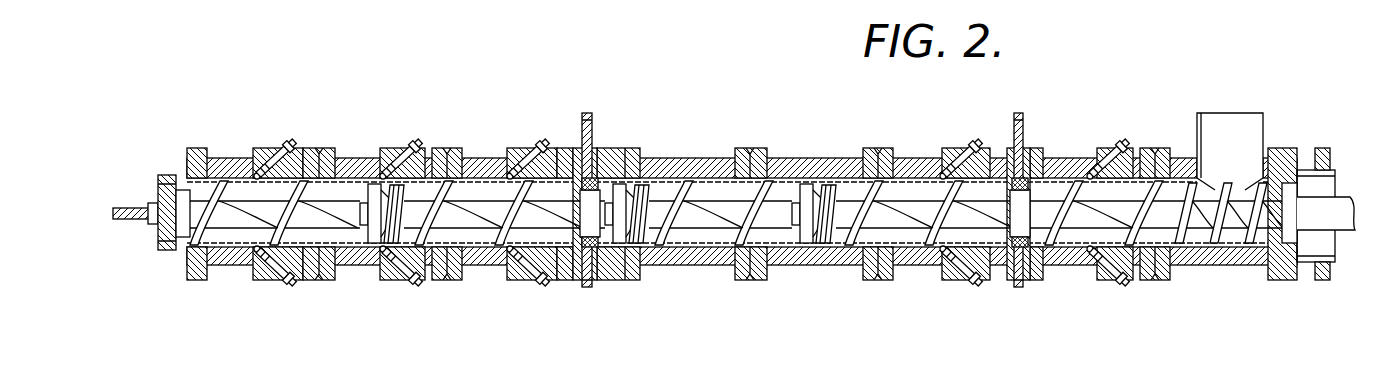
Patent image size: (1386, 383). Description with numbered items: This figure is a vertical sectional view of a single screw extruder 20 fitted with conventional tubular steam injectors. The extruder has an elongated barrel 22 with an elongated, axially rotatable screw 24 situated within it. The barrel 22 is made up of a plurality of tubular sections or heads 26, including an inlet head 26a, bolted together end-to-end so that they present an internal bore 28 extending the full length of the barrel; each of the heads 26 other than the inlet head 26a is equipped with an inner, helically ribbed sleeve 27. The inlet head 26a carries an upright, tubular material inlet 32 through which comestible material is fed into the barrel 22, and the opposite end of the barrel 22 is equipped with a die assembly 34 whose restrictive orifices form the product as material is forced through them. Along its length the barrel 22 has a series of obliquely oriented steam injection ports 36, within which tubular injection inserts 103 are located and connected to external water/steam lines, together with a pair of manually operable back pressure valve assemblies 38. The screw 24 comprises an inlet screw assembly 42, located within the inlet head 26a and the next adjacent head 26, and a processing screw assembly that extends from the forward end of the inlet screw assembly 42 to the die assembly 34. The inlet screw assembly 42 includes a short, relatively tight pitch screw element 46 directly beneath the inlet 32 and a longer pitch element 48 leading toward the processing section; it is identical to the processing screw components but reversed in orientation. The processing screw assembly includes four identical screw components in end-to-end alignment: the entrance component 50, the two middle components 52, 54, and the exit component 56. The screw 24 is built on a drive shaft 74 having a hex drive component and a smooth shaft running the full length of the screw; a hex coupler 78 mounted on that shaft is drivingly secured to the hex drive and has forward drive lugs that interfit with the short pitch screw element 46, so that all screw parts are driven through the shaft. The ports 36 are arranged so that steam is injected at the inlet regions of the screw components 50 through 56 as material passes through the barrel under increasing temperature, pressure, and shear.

The single screw extruder 20 is at (1122, 40).
The barrel 22 is at (779, 135).
The screw 24 is at (736, 214).
The tubular sections or heads 26 is at (225, 265).
The inlet head 26a is at (1232, 265).
The helically ribbed sleeve 27 is at (906, 265).
The internal bore 28 is at (690, 186).
The material inlet 32 is at (1223, 120).
The die assembly 34 is at (150, 168).
The steam injection ports 36 is at (1100, 266).
The back pressure valve assemblies 38 is at (610, 120).
The inlet screw assembly 42 is at (1185, 252).
The short pitch screw element 46 is at (1250, 188).
The longer pitch element 48 is at (1131, 205).
The entrance screw component 50 is at (936, 205).
The middle screw component 52 is at (652, 222).
The middle screw component 54 is at (478, 205).
The exit screw component 56 is at (334, 205).
The drive shaft 74 is at (1340, 205).
The hex coupler 78 is at (1304, 237).
The tubular injection inserts 103 is at (281, 150).